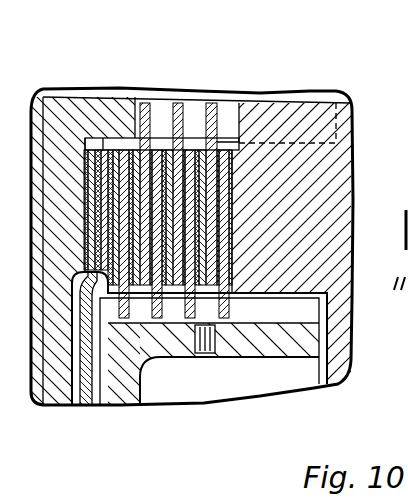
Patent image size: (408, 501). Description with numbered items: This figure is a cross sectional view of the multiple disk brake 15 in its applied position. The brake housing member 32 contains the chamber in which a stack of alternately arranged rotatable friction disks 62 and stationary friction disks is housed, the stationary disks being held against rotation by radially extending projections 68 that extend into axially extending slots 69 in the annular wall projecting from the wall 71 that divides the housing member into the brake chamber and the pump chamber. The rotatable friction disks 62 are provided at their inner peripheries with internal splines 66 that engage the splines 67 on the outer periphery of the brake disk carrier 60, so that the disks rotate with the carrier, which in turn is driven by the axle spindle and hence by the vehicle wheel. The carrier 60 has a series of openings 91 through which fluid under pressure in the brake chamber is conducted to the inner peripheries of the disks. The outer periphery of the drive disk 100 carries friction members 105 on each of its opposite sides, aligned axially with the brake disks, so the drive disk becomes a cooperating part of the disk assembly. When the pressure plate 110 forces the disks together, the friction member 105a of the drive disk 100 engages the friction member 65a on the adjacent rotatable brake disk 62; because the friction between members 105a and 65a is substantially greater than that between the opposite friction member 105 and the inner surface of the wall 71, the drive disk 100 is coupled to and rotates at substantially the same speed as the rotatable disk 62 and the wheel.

The brake 15 is at (68, 407).
The brake housing member 32 is at (63, 88).
The wall 71 is at (50, 125).
The drive disk 100 is at (204, 250).
The friction member 105 is at (97, 148).
The friction member 105a is at (118, 148).
The friction member 65a is at (113, 214).
The radially extending projection 68 is at (209, 107).
The axially extending slot 69 is at (227, 117).
The pressure plate 110 is at (340, 353).
The rotatable friction disk 62 is at (127, 308).
The brake disk carrier 60 is at (127, 390).
The internal spline 66 is at (224, 312).
The spline 67 is at (266, 312).
The opening 91 is at (211, 352).